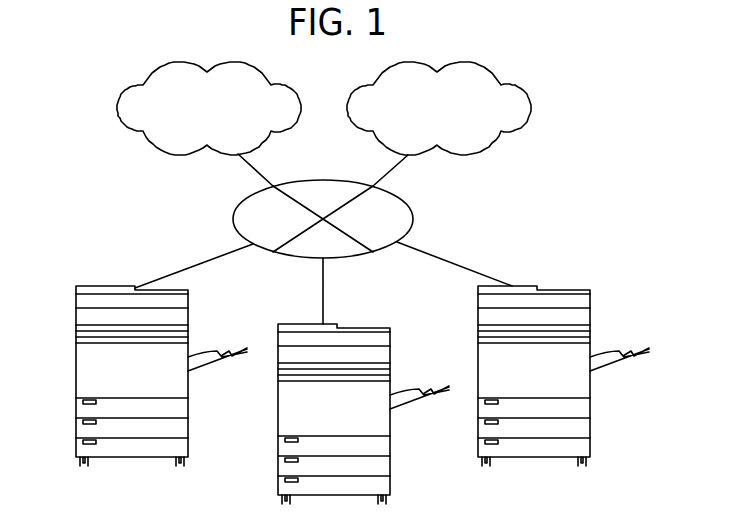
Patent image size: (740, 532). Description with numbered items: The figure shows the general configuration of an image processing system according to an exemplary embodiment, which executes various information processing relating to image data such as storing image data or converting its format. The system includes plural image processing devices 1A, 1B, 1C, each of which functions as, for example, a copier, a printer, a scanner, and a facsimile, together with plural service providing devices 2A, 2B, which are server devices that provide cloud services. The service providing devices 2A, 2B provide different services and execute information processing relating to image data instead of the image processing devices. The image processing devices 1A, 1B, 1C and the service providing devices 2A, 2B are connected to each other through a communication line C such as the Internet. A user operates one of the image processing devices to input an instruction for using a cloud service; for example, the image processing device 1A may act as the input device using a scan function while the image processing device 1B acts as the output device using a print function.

The image processing device 1A is at (102, 284).
The image processing device 1B is at (378, 321).
The image processing device 1C is at (571, 288).
The service providing device 2A is at (117, 108).
The service providing device 2B is at (531, 108).
The communication line C is at (413, 219).